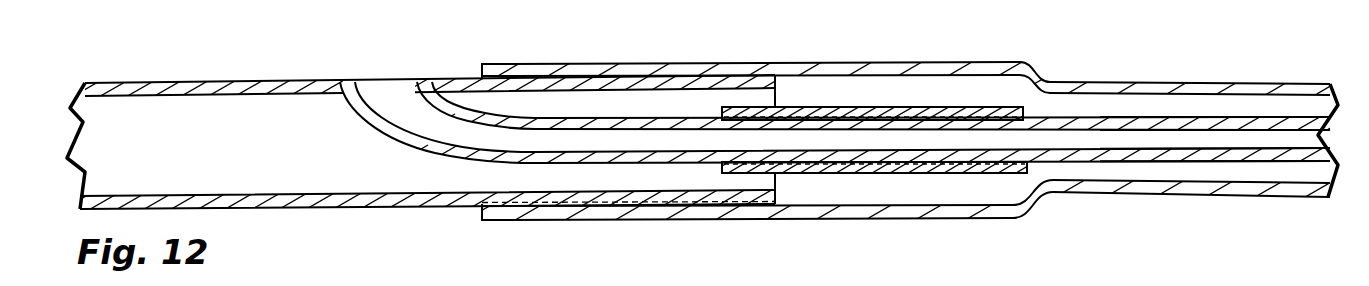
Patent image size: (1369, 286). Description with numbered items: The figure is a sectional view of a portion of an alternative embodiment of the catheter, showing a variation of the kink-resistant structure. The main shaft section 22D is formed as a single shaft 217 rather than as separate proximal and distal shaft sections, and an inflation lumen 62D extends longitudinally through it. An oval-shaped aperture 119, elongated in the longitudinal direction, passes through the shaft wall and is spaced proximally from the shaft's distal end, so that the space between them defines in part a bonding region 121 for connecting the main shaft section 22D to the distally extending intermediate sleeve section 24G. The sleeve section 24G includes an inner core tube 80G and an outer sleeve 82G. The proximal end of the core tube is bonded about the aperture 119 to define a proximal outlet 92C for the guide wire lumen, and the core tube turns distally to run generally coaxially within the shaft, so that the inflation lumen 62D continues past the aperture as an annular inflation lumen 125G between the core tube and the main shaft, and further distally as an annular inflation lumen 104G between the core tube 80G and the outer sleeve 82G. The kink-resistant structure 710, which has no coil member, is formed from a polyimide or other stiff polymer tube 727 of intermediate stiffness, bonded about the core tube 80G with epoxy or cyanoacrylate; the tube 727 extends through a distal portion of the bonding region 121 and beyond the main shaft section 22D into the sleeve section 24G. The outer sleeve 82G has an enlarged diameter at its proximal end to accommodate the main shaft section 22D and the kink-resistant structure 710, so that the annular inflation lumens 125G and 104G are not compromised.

The main shaft section 22D is at (431, 168).
The inflation lumen 62D is at (240, 162).
The single shaft 217 is at (340, 210).
The proximal outlet 92C is at (377, 93).
The aperture 119 is at (390, 83).
The bonding region 121 is at (590, 97).
The annular inflation lumen 125G is at (593, 171).
The kink-resistant structure 710 is at (885, 108).
The stiff polymer tube 727 is at (997, 108).
The intermediate sleeve section 24G is at (1162, 75).
The outer sleeve 82G is at (1273, 81).
The inner core tube 80G is at (1196, 118).
The annular inflation lumen 104G is at (1152, 172).